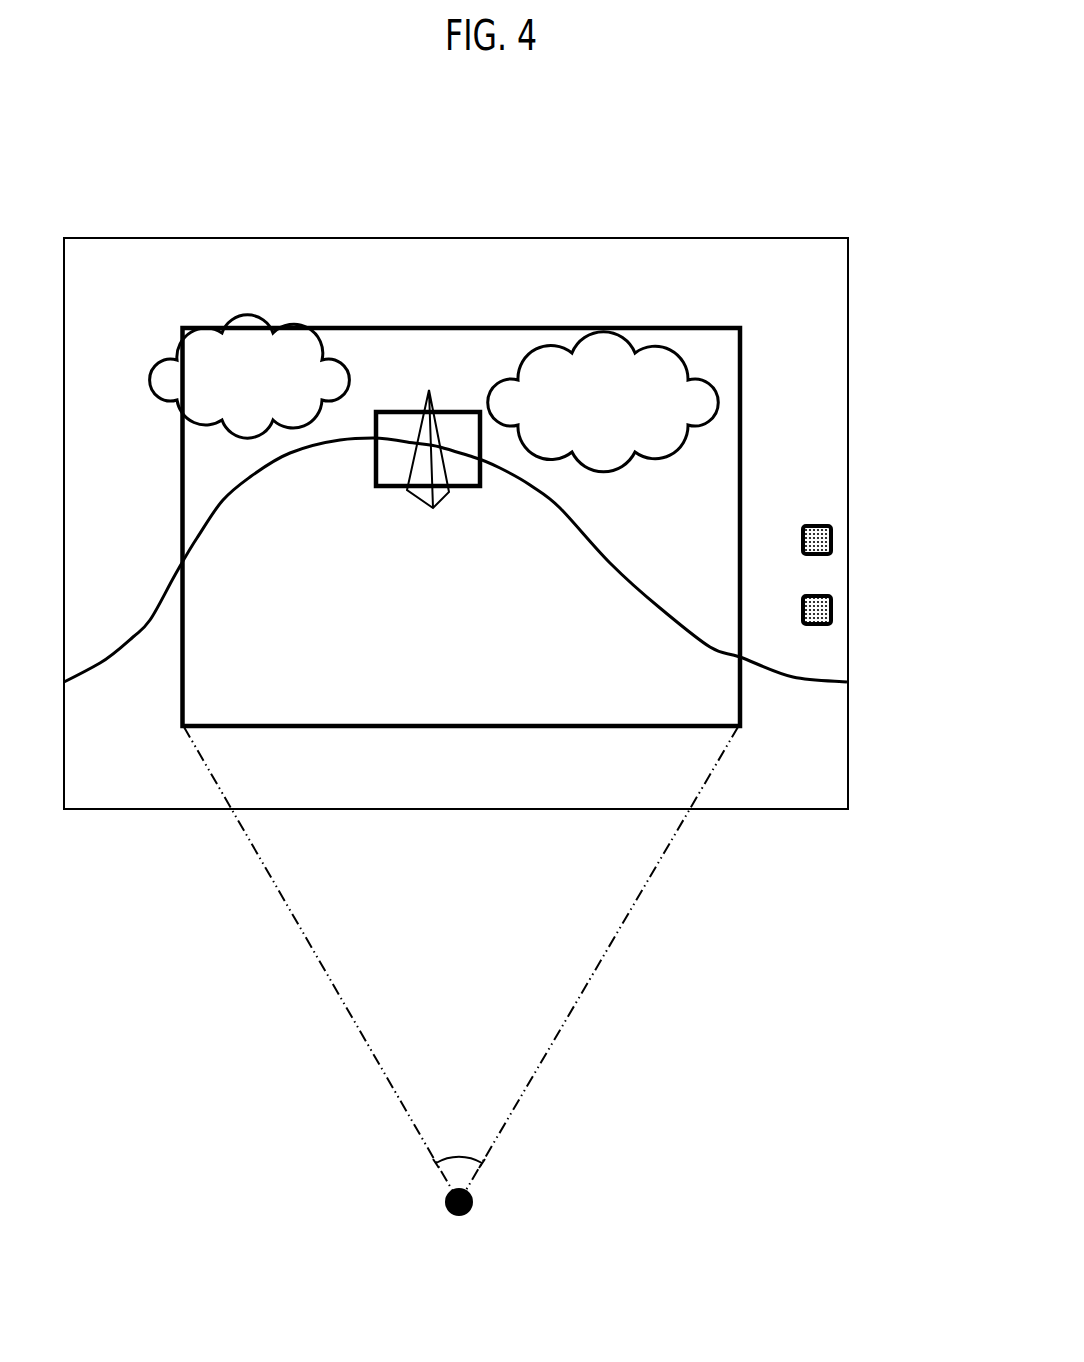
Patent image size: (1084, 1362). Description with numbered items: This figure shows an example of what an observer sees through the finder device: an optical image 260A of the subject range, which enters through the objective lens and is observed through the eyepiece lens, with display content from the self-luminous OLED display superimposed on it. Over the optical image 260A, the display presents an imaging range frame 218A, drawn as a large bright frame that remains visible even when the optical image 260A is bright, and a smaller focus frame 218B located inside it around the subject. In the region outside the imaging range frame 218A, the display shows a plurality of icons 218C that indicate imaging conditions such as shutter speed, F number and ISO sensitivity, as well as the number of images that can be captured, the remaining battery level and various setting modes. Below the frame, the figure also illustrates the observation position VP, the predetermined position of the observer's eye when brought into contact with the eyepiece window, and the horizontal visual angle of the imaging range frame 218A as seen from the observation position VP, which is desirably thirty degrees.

The optical image 260A is at (782, 238).
The imaging range frame 218A is at (403, 327).
The focus frame 218B is at (452, 410).
The icons 218C is at (817, 525).
The observation position VP is at (473, 1200).